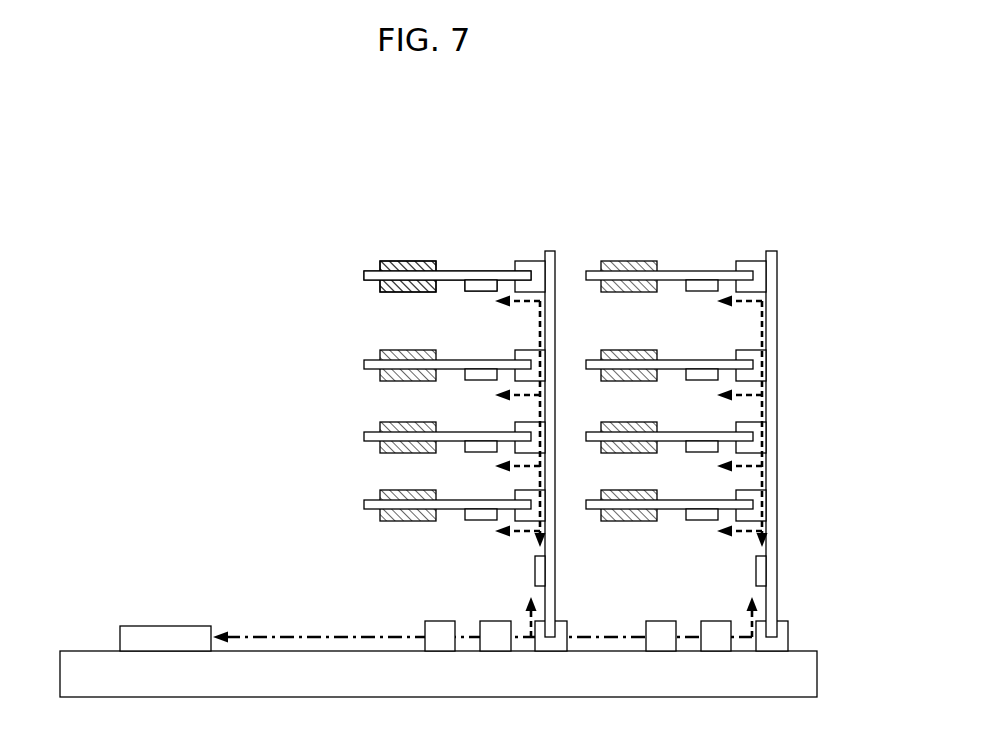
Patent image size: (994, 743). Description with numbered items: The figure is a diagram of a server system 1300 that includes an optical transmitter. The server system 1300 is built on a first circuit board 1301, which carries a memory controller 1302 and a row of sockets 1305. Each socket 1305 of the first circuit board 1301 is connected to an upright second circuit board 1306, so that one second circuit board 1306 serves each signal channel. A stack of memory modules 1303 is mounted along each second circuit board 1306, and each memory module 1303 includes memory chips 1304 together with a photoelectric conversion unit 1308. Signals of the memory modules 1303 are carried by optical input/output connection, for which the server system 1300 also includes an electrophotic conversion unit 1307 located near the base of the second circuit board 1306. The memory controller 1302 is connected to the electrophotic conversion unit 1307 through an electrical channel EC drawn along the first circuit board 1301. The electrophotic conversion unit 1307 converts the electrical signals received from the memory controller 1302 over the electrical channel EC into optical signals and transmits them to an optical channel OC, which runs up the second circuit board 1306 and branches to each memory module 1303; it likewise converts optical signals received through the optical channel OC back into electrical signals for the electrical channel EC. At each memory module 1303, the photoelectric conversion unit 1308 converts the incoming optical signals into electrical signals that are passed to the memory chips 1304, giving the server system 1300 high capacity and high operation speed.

The server system 1300 is at (796, 136).
The first circuit board 1301 is at (93, 680).
The memory controller 1302 is at (165, 626).
The memory module 1303 is at (364, 274).
The memory chips 1304 is at (424, 286).
The socket 1305 is at (550, 652).
The second circuit board 1306 is at (556, 591).
The electrophotic conversion unit 1307 is at (535, 572).
The photoelectric conversion unit 1308 is at (481, 287).
The optical channel OC is at (540, 323).
The electrical channel EC is at (265, 633).